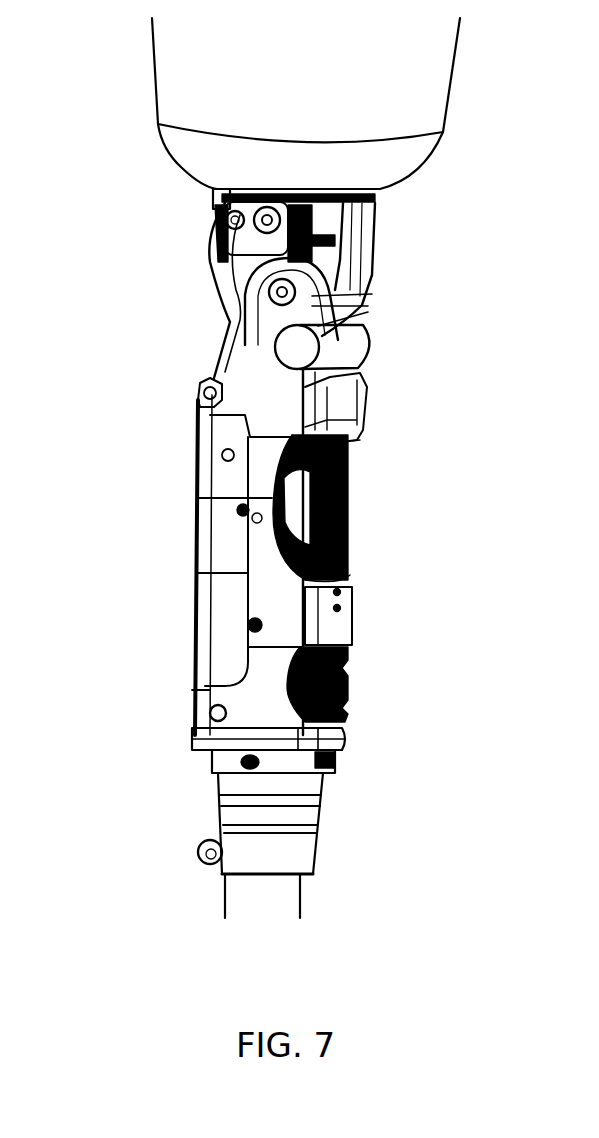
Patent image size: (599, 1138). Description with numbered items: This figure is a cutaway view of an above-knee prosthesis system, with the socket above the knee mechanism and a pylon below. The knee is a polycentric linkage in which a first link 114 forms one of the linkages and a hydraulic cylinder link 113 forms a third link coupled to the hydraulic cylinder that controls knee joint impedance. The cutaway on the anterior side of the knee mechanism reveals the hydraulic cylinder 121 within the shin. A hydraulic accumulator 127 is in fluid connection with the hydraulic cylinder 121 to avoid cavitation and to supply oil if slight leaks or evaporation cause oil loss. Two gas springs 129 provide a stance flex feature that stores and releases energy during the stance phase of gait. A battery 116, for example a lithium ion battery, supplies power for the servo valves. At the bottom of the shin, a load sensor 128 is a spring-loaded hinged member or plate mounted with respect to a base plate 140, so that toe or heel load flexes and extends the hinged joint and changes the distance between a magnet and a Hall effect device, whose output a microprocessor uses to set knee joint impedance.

The hydraulic cylinder link 113 is at (205, 283).
The first link 114 is at (378, 233).
The battery 116 is at (380, 337).
The hydraulic cylinder 121 is at (266, 514).
The hydraulic accumulator 127 is at (352, 564).
The load sensor 128 is at (192, 731).
The gas springs 129 is at (345, 690).
The base plate 140 is at (207, 758).